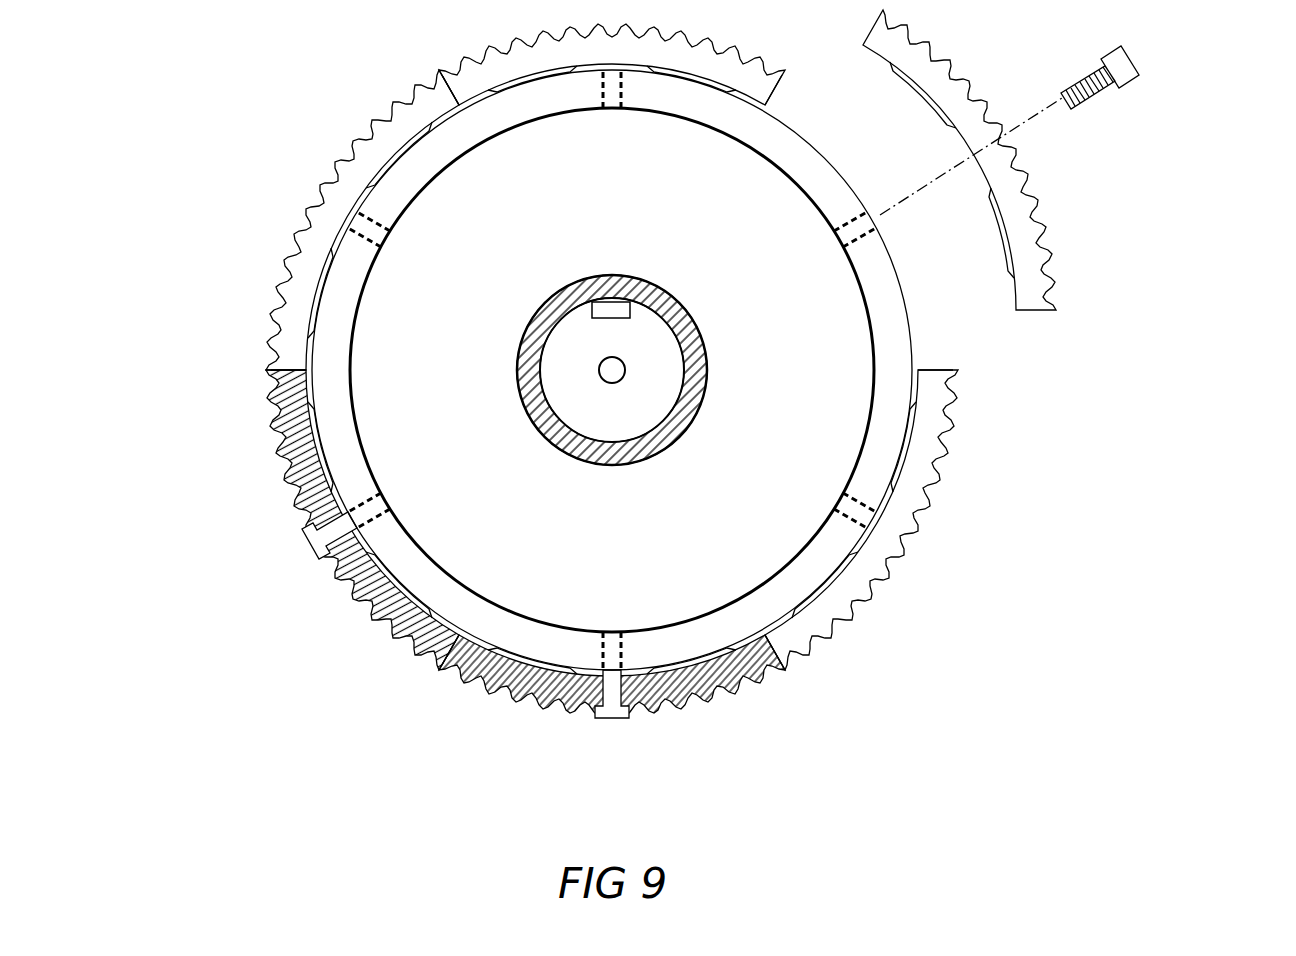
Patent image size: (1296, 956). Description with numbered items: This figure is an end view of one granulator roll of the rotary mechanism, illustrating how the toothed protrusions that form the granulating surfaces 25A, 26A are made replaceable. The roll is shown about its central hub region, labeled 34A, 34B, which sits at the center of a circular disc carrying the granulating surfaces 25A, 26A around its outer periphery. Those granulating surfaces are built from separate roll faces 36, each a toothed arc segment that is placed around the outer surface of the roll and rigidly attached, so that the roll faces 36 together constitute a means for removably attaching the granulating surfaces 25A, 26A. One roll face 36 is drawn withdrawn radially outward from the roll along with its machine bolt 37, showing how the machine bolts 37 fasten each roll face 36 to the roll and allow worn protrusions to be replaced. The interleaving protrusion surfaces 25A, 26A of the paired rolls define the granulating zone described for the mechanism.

The granulating surface 25A is at (498, 371).
The granulating surface 26A is at (298, 213).
The hub 34A is at (612, 422).
The hub 34B is at (605, 418).
The roll face 36 is at (1062, 220).
The machine bolt 37 is at (1085, 112).